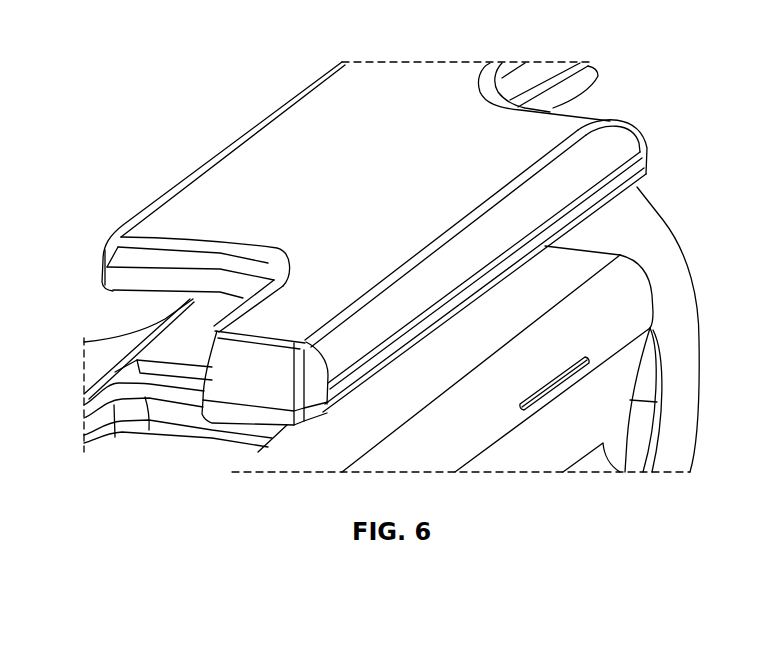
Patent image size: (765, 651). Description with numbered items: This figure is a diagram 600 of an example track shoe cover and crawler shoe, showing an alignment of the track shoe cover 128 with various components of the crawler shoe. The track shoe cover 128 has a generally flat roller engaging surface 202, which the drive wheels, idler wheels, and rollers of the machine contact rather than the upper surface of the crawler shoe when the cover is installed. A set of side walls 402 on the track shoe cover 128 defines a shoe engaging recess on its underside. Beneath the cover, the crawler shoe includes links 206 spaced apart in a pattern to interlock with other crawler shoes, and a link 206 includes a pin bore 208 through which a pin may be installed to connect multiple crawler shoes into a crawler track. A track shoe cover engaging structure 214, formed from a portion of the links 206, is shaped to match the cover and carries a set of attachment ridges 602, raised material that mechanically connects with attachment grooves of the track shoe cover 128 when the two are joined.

The diagram 600 is at (89, 15).
The track shoe cover 128 is at (229, 142).
The roller engaging surface 202 is at (411, 167).
The side wall 402 is at (625, 148).
The link 206 is at (659, 253).
The track shoe cover engaging structure 214 is at (638, 308).
The pin bore 208 is at (645, 413).
The attachment ridge 602 is at (555, 382).